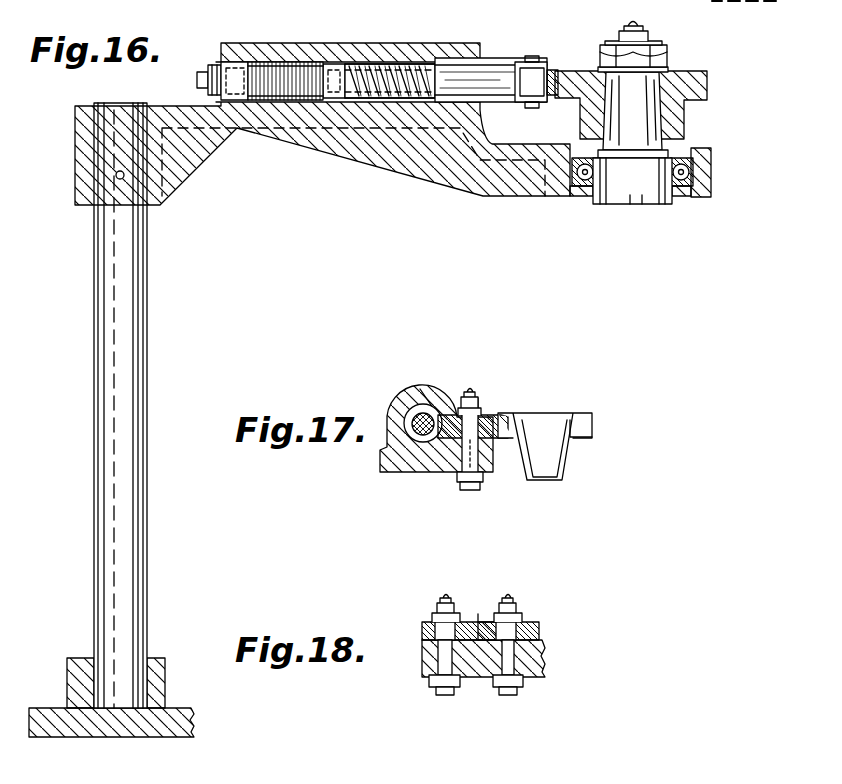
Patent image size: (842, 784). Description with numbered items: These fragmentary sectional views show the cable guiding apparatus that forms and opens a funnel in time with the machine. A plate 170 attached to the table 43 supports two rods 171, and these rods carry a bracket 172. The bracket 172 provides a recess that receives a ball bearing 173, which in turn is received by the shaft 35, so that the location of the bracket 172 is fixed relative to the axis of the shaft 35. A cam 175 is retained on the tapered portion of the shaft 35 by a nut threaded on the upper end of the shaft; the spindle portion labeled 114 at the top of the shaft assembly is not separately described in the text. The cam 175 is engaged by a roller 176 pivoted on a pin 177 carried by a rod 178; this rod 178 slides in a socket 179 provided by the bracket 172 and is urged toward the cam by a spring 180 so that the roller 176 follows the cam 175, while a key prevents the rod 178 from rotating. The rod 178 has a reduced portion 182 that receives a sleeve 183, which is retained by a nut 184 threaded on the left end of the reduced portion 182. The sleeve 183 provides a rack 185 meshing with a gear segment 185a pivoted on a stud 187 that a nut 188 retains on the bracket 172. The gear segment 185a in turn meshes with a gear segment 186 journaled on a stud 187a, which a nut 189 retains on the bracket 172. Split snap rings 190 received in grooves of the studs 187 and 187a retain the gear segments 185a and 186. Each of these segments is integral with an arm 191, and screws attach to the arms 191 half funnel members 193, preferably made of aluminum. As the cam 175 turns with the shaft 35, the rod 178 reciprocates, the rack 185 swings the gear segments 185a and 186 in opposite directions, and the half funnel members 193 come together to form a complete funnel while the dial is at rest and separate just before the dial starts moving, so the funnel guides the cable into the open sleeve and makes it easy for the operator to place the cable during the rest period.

In FIG. 16, the shaft 35 is at (640, 205).
In FIG. 16, the plate 43 is at (86, 741).
In FIG. 16, the spindle 114 is at (656, 62).
In FIG. 16, the plate 170 is at (68, 658).
In FIG. 16, the rods 171 is at (94, 400).
In FIG. 16, the bracket 172 is at (76, 147).
In FIG. 17, the bracket 172 is at (420, 392).
In FIG. 18, the bracket 172 is at (545, 656).
In FIG. 16, the ball bearing 173 is at (712, 150).
In FIG. 16, the cam 175 is at (707, 86).
In FIG. 16, the roller 176 is at (556, 72).
In FIG. 16, the pin 177 is at (533, 60).
In FIG. 16, the rod 178 is at (483, 68).
In FIG. 16, the socket 179 is at (368, 62).
In FIG. 16, the spring 180 is at (406, 62).
In FIG. 16, the reduced portion 182 is at (197, 80).
In FIG. 17, the reduced portion 182 is at (416, 437).
In FIG. 16, the sleeve 183 is at (229, 62).
In FIG. 17, the sleeve 183 is at (408, 432).
In FIG. 16, the nut 184 is at (210, 65).
In FIG. 16, the rack 185 is at (279, 100).
In FIG. 17, the rack 185 is at (440, 412).
In FIG. 17, the gear segment 185a is at (490, 418).
In FIG. 18, the gear segment 185a is at (526, 624).
In FIG. 18, the gear segment 186 is at (467, 616).
In FIG. 17, the stud 187 is at (462, 462).
In FIG. 18, the stud 187 is at (512, 660).
In FIG. 18, the stud 187a is at (445, 655).
In FIG. 17, the nut 188 is at (482, 486).
In FIG. 18, the nut 188 is at (510, 696).
In FIG. 18, the nut 189 is at (430, 686).
In FIG. 18, the split snap rings 190 is at (432, 622).
In FIG. 17, the arms 191 is at (592, 431).
In FIG. 17, the half funnel members 193 is at (535, 414).